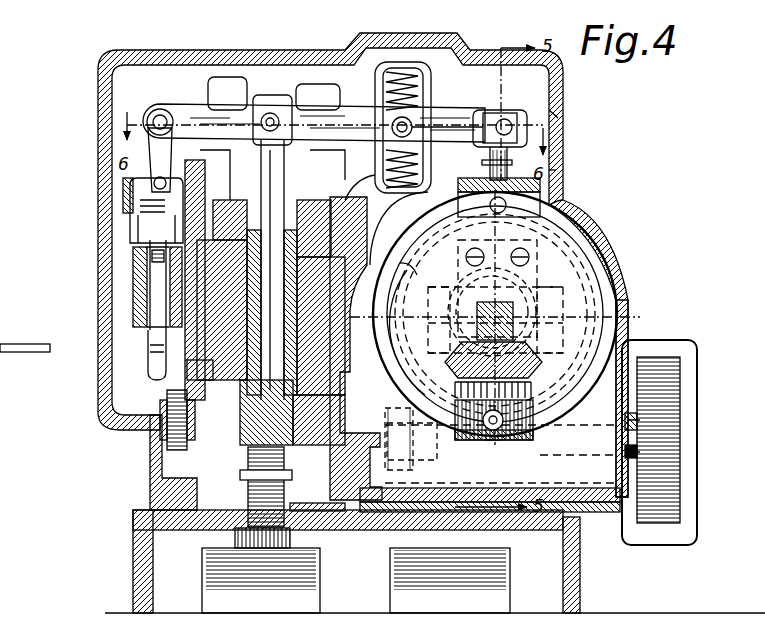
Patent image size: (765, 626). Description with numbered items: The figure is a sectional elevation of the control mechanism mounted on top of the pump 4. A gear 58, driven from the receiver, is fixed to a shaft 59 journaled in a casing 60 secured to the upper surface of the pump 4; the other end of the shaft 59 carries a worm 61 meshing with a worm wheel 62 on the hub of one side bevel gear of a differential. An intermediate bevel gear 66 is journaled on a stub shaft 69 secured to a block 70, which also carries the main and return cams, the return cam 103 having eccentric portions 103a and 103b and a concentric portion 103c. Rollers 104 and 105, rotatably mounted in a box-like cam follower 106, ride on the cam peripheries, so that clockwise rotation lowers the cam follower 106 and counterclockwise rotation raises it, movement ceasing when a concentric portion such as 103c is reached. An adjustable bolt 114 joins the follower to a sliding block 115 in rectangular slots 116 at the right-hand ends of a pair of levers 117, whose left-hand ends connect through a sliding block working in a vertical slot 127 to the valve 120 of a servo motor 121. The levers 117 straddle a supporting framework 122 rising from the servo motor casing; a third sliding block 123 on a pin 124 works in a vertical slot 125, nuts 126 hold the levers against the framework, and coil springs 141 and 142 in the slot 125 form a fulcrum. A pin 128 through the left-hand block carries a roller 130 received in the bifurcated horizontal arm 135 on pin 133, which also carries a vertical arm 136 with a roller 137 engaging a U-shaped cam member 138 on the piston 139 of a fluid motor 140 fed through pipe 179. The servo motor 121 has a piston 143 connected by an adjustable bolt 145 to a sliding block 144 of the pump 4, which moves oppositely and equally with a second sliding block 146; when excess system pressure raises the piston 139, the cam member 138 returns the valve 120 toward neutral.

The pump 4 is at (572, 574).
The gear 58 is at (672, 393).
The shaft 59 is at (410, 460).
The casing 60 is at (580, 228).
The worm 61 is at (395, 385).
The worm wheel 62 is at (624, 322).
The intermediate bevel gear 66 is at (530, 360).
The stub shaft 69 is at (488, 378).
The block 70 is at (513, 318).
The return cam 103 is at (575, 250).
The eccentric portion 103a is at (570, 462).
The eccentric portion 103b is at (566, 200).
The concentric portion 103c is at (607, 285).
The roller 104 is at (460, 185).
The roller 105 is at (492, 440).
The cam follower 106 is at (556, 170).
The adjustable bolt 114 is at (560, 140).
The sliding block 115 is at (508, 118).
The rectangular slots 116 is at (558, 118).
The levers 117 is at (372, 178).
The valve 120 is at (284, 178).
The servo motor 121 is at (185, 395).
The supporting framework 122 is at (303, 82).
The sliding block 123 is at (383, 183).
The pin 124 is at (420, 124).
The vertical slot 125 is at (415, 90).
The nuts 126 is at (392, 128).
The vertical slot 127 is at (296, 112).
The pin 128 is at (330, 60).
The roller 130 is at (268, 100).
The pin 133 is at (160, 108).
The horizontal arm 135 is at (185, 112).
The vertical arm 136 is at (152, 152).
The roller 137 is at (154, 183).
The cam member 138 is at (140, 226).
The piston 139 is at (138, 275).
The fluid motor 140 is at (140, 300).
The coil spring 141 is at (405, 75).
The coil spring 142 is at (415, 163).
The piston 143 is at (215, 400).
The sliding block 144 is at (322, 575).
The adjustable bolt 145 is at (292, 478).
The sliding block 146 is at (512, 575).
The pipe 179 is at (150, 370).